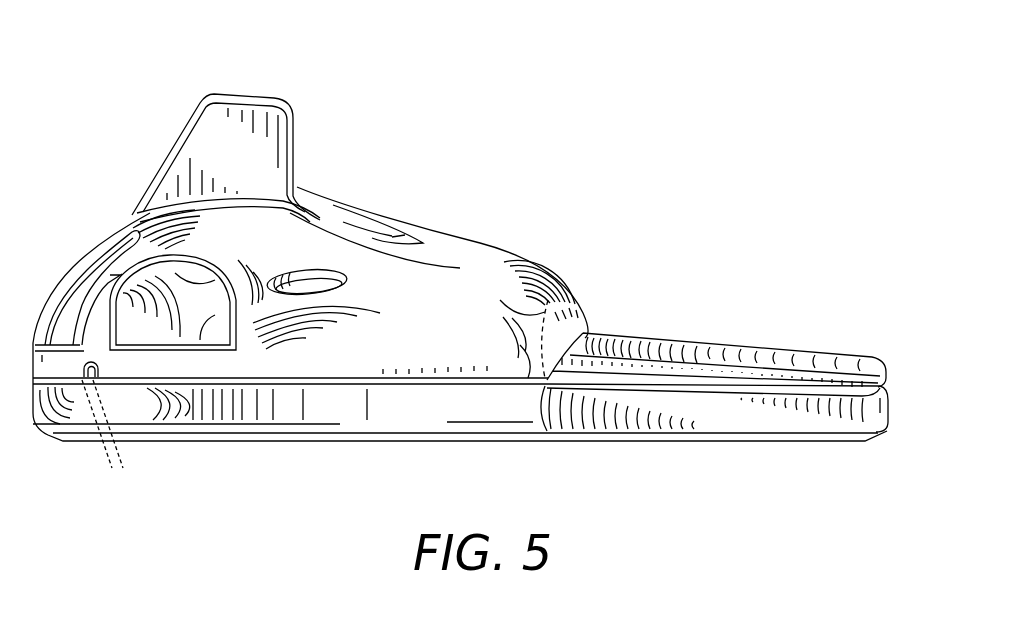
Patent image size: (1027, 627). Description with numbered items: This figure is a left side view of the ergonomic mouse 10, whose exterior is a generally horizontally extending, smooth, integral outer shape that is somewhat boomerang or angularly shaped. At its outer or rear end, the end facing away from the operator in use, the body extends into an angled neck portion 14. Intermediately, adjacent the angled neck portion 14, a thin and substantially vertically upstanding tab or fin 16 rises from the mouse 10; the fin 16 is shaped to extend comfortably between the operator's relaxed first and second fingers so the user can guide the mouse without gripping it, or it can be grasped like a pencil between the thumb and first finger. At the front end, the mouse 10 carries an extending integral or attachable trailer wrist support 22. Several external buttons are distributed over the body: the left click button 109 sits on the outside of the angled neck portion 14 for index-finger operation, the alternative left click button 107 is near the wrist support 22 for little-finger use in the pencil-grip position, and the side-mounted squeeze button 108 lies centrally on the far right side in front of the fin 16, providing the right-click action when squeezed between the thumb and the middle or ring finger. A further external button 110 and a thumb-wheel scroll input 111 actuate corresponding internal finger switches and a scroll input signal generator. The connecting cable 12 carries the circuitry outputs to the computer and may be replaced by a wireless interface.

The mouse 10 is at (460, 267).
The cable 12 is at (128, 473).
The angled neck portion 14 is at (237, 233).
The fin 16 is at (221, 126).
The wrist support 22 is at (697, 350).
The left click button 107 is at (473, 240).
The squeeze button 108 is at (122, 222).
The left click button 109 is at (70, 290).
The external button 110 is at (150, 337).
The thumb-wheel scroll input 111 is at (318, 277).